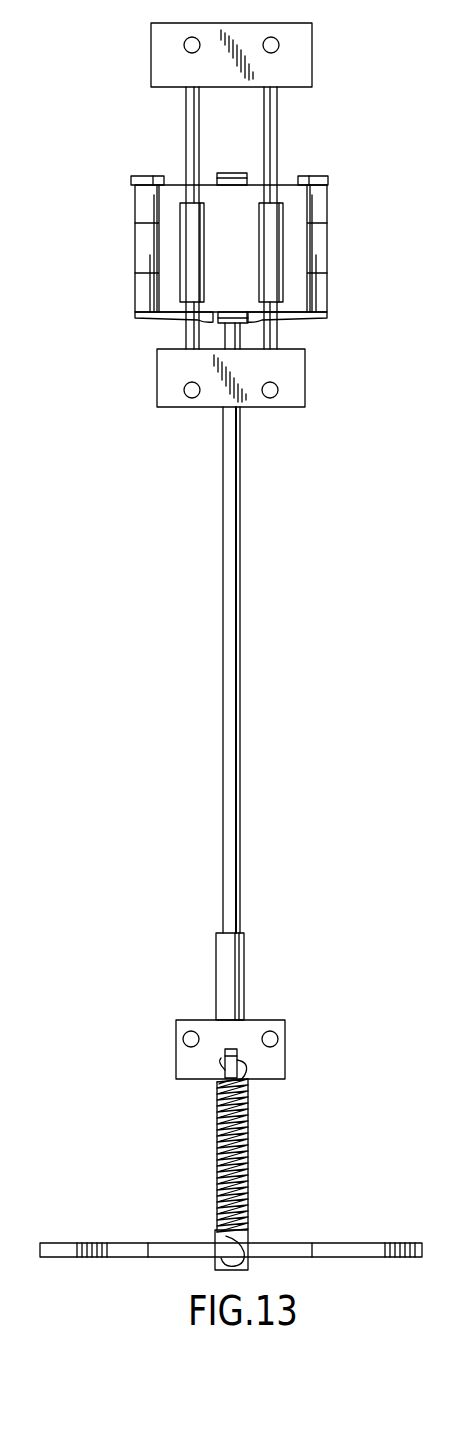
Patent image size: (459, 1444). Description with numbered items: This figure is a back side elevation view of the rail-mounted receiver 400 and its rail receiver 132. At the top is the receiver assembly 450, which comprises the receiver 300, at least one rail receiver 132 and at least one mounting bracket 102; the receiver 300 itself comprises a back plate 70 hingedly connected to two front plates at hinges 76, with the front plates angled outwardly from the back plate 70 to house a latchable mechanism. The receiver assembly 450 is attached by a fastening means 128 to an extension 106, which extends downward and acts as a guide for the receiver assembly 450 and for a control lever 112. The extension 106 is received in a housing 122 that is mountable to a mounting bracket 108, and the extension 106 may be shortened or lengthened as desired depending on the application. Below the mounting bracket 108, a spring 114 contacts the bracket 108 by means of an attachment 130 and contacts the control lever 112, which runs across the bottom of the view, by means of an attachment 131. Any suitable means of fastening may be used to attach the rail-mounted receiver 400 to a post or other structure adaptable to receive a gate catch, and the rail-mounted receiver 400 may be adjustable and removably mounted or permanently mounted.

The mounting bracket 102 is at (158, 44).
The receiver assembly 450 is at (132, 149).
The receiver 300 is at (116, 299).
The hinge 76 is at (325, 178).
The fastening means 128 is at (244, 173).
The back plate 70 is at (240, 208).
The rail receiver 132 is at (192, 263).
The rail-mounted receiver 400 is at (159, 670).
The extension 106 is at (232, 578).
The housing 122 is at (222, 968).
The mounting bracket 108 is at (177, 1038).
The attachment 130 is at (224, 1054).
The spring 114 is at (216, 1133).
The control lever 112 is at (166, 1243).
The attachment 131 is at (222, 1249).